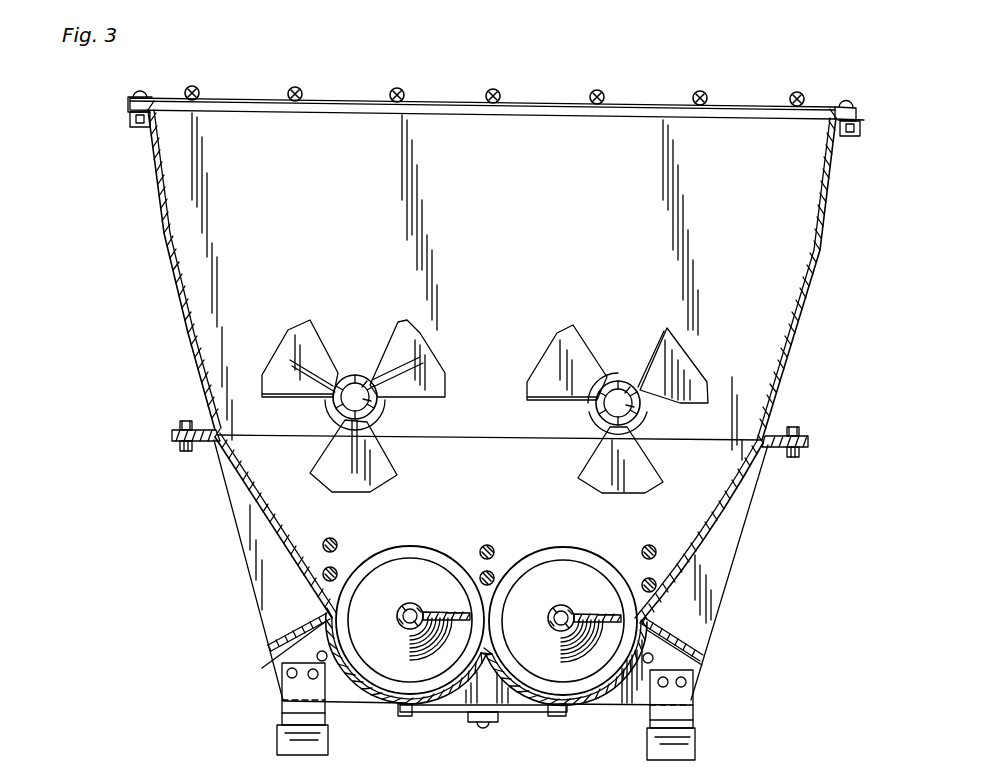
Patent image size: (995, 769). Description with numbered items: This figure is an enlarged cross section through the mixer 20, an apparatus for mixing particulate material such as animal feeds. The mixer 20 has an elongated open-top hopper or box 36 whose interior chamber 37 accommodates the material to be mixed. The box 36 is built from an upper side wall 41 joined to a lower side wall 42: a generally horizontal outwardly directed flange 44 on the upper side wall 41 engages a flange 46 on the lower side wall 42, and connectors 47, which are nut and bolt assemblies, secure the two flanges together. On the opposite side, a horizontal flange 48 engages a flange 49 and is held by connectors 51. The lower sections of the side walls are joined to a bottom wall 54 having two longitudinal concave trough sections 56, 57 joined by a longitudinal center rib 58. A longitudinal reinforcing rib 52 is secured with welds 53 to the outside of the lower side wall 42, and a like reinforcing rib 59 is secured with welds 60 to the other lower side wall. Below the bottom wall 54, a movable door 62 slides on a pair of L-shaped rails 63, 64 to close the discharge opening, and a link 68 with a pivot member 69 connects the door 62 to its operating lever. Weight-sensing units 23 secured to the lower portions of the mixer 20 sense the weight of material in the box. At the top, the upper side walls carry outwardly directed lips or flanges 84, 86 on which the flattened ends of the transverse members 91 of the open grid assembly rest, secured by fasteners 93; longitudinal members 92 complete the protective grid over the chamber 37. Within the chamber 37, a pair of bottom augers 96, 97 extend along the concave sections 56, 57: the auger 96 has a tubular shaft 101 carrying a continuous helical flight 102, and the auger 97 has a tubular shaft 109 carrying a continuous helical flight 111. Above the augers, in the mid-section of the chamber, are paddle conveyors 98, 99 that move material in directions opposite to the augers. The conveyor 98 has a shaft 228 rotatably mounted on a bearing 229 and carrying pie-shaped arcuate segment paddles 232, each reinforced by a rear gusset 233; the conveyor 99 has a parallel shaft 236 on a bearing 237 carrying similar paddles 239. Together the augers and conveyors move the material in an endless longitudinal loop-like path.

The mixer 20 is at (283, 52).
The weight-sensing units 23 is at (300, 738).
The hopper or box 36 is at (158, 240).
The chamber 37 is at (482, 228).
The upper side wall 41 is at (151, 175).
The lower side wall 42 is at (814, 242).
The flange 44 is at (172, 434).
The flange 46 is at (178, 444).
The connectors 47 is at (186, 421).
The horizontal flange 48 is at (810, 440).
The flange 49 is at (800, 450).
The connectors 51 is at (793, 427).
The longitudinal plate or reinforcing rib 52 is at (268, 643).
The welds 53 is at (266, 661).
The bottom wall 54 is at (368, 703).
The concave trough section 56 is at (393, 708).
The concave trough section 57 is at (612, 708).
The center portion or rib 58 is at (484, 656).
The longitudinal plate or reinforcing rib 59 is at (702, 650).
The welds 60 is at (698, 676).
The movable door 62 is at (530, 713).
The L-shaped rail 63 is at (412, 714).
The L-shaped rail 64 is at (560, 716).
The link 68 is at (494, 724).
The pivot member 69 is at (482, 729).
The top lip or flange 84 is at (130, 122).
The top lip or flange 86 is at (862, 128).
The transverse members or tubes 91 is at (346, 103).
The longitudinal members or tubes 92 is at (197, 89).
The fasteners 93 is at (140, 98).
The bottom auger 96 is at (410, 596).
The bottom auger 97 is at (563, 597).
The paddle conveyor 98 is at (337, 375).
The paddle conveyor 99 is at (637, 338).
The tubular shaft 101 is at (398, 610).
The first continuous helical flight 102 is at (434, 611).
The tubular shaft 109 is at (562, 605).
The first continuous helical flight 111 is at (593, 613).
The shaft 228 is at (352, 375).
The bearing 229 is at (385, 408).
The pie-shaped members or arcuate segment paddles 232 is at (294, 340).
The rear gusset 233 is at (348, 450).
The shaft 236 is at (617, 381).
The bearing 237 is at (647, 418).
The pie-shaped members or arcuate segment paddles 239 is at (685, 350).